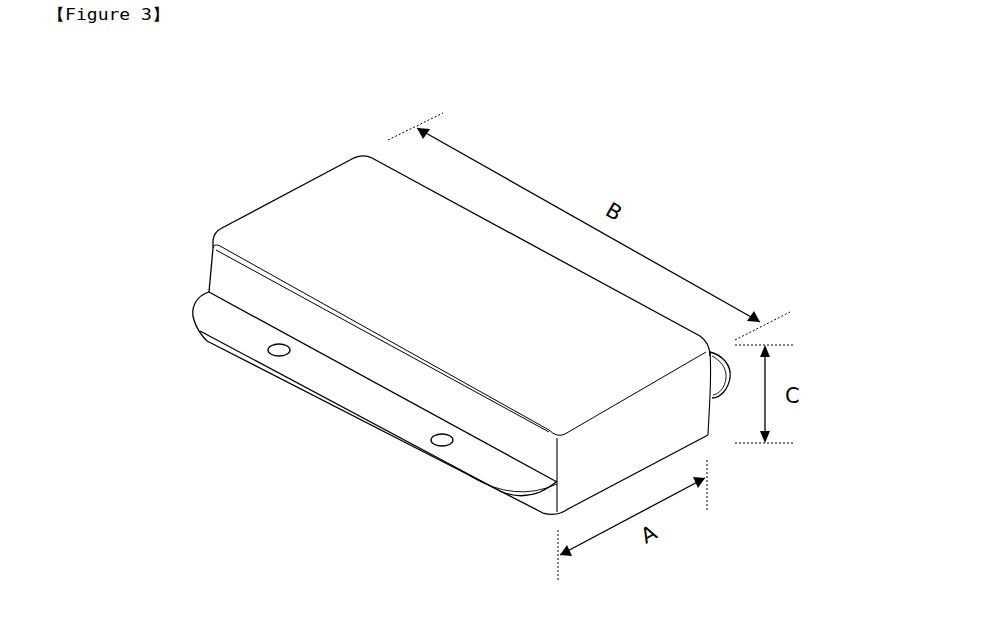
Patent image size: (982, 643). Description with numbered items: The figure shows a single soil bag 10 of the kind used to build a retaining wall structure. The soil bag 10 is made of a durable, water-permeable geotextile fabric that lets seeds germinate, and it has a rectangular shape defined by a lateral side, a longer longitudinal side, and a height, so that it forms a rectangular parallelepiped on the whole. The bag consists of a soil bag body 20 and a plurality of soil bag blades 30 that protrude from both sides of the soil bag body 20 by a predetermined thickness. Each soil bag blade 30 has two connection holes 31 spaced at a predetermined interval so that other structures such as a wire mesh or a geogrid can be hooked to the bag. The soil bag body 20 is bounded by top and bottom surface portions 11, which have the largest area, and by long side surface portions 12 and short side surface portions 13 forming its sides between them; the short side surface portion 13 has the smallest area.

The soil bag 10 is at (314, 138).
The top and bottom surface portions 11 is at (508, 381).
The long side surface portion 12 is at (403, 382).
The short side surface portion 13 is at (670, 423).
The soil bag body 20 is at (268, 200).
The soil bag blade 30 is at (215, 323).
The connection hole 31 is at (265, 352).